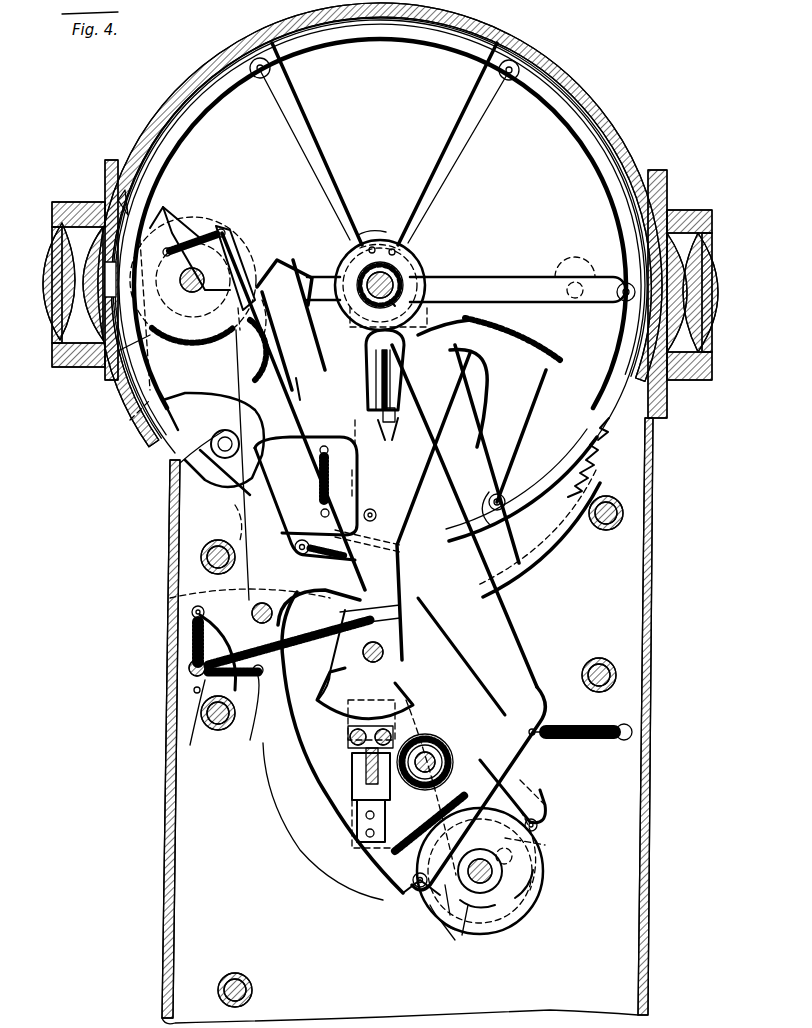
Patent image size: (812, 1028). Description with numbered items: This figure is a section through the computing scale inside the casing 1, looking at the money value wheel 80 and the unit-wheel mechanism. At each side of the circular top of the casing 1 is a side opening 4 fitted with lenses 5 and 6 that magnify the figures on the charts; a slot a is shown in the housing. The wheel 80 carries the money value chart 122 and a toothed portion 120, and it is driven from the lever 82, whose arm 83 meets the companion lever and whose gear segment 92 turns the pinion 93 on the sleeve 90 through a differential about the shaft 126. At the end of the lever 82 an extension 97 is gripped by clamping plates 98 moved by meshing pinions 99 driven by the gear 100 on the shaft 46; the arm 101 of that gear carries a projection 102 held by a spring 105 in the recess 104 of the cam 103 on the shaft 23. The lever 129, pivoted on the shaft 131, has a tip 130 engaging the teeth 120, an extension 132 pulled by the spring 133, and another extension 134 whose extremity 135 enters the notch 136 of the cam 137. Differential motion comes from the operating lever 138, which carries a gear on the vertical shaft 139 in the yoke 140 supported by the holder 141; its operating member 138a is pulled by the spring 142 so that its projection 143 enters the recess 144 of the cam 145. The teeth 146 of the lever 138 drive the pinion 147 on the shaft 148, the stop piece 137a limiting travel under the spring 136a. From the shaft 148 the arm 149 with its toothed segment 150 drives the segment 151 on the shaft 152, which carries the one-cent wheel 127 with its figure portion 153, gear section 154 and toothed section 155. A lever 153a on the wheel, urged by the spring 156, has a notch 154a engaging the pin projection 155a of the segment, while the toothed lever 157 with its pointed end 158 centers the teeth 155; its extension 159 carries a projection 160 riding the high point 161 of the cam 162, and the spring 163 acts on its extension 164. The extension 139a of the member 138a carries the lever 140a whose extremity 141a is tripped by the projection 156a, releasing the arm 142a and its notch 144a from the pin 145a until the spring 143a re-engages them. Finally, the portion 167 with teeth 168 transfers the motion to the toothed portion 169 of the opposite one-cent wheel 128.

The casing 1 is at (655, 680).
The side opening 4 is at (712, 216).
The lens 5 is at (700, 320).
The lens 6 is at (718, 292).
The housing slot a is at (52, 358).
The shaft 23 is at (478, 885).
The shaft 46 is at (386, 810).
The money value wheel 80 is at (297, 45).
The lever 82 is at (495, 462).
The arm 83 is at (396, 430).
The sleeve 90 is at (372, 296).
The gear segment 92 is at (449, 310).
The pinion 93 is at (345, 262).
The extension 97 is at (350, 742).
The clamping plates 98 is at (360, 748).
The pinions 99 is at (366, 765).
The gear 100 is at (428, 734).
The arm 101 is at (440, 808).
The projection 102 is at (515, 858).
The cam 103 is at (520, 900).
The recess 104 is at (540, 795).
The spring 105 is at (400, 878).
The toothed portion 120 is at (612, 436).
The money value chart 122 is at (586, 100).
The shaft 126 is at (396, 275).
The 1-cent wheel 127 is at (172, 218).
The 1-cent wheel 128 is at (590, 272).
The lever 129 is at (512, 575).
The projecting tip 130 is at (594, 466).
The shaft 131 is at (255, 605).
The extension 132 is at (192, 610).
The spring 133 is at (192, 648).
The extension 134 is at (300, 790).
The extremity 135 is at (430, 905).
The notch 136 is at (445, 912).
The spring 136a is at (290, 625).
The cam 137 is at (465, 936).
The stop piece 137a is at (392, 662).
The operating lever 138 is at (380, 490).
The operating member 138a is at (493, 640).
The vertical shaft 139 is at (398, 372).
The extension 139a is at (217, 522).
The yoke 140 is at (396, 236).
The lever 140a is at (262, 410).
The holder 141 is at (371, 230).
The extremity 141a is at (269, 320).
The spring 142 is at (578, 722).
The arm 142a is at (333, 510).
The projection 143 is at (412, 888).
The spring 143a is at (350, 470).
The recess 144 is at (445, 935).
The notch 144a is at (380, 525).
The cam 145 is at (490, 918).
The pin 145a is at (378, 508).
The teeth 146 is at (470, 540).
The pinion 147 is at (345, 650).
The shaft 148 is at (360, 678).
The arm 149 is at (180, 487).
The toothed segment 150 is at (150, 400).
The segment 151 is at (240, 262).
The shaft 152 is at (236, 235).
The portion 153 is at (120, 200).
The lever 153a is at (272, 262).
The gear section 154 is at (135, 345).
The notch 154a is at (215, 296).
The toothed section 155 is at (255, 345).
The pin projection 155a is at (140, 375).
The spring 156 is at (204, 240).
The projection 156a is at (232, 360).
The toothed lever 157 is at (278, 372).
The pointed end 158 is at (352, 268).
The extension 159 is at (520, 777).
The projection 160 is at (537, 823).
The high point 161 is at (548, 845).
The cam 162 is at (548, 882).
The spring 163 is at (204, 717).
The extension 164 is at (242, 715).
The portion 167 is at (513, 432).
The teeth 168 is at (500, 350).
The toothed portion 169 is at (506, 322).